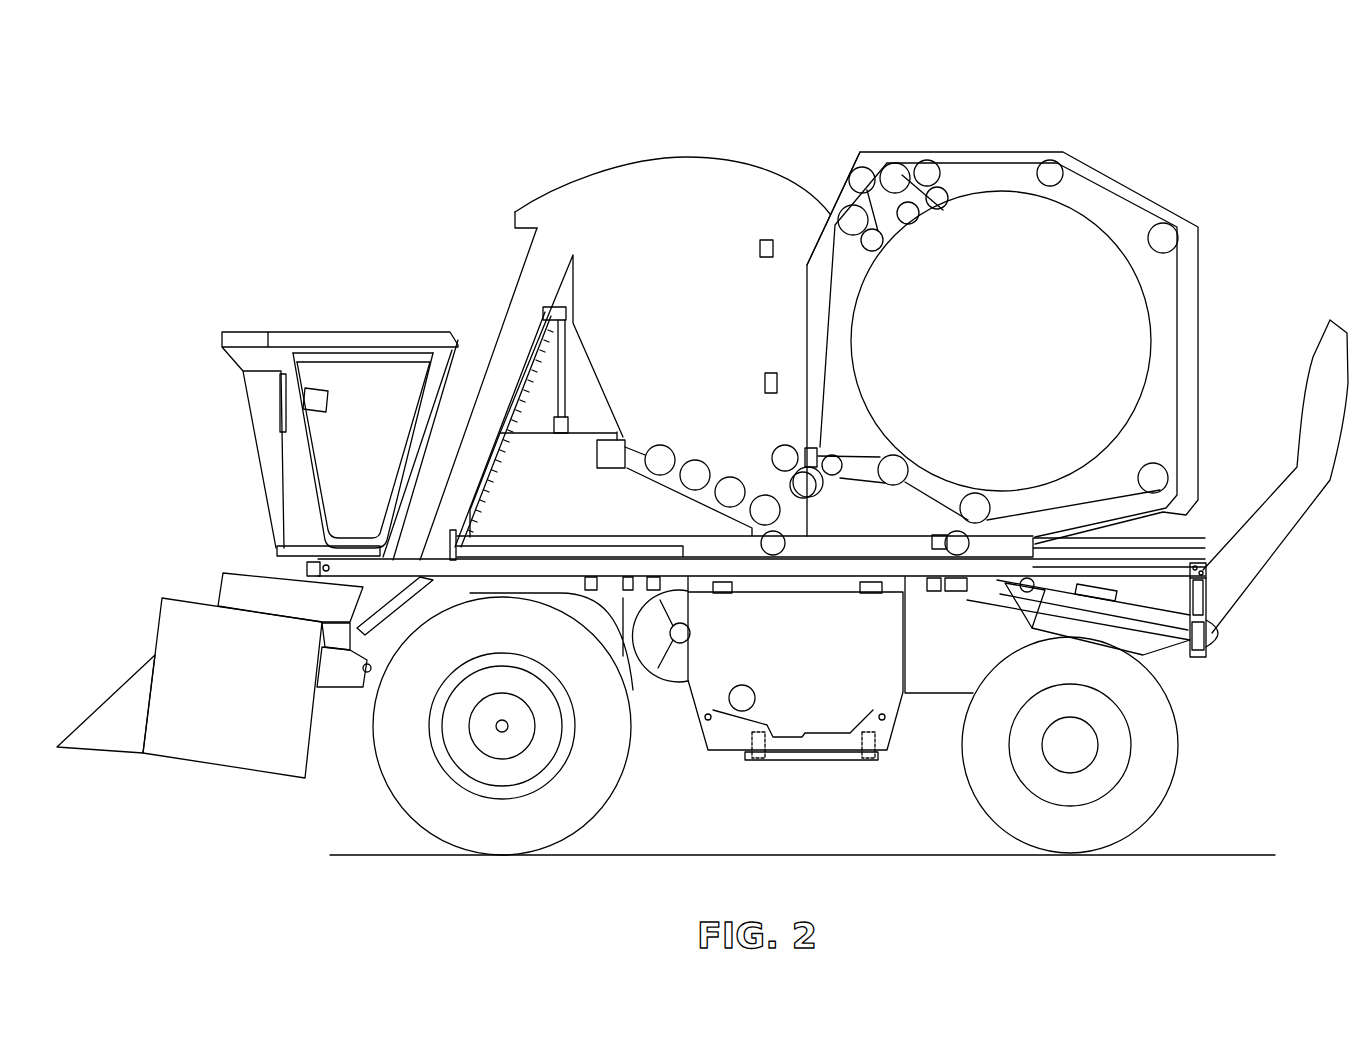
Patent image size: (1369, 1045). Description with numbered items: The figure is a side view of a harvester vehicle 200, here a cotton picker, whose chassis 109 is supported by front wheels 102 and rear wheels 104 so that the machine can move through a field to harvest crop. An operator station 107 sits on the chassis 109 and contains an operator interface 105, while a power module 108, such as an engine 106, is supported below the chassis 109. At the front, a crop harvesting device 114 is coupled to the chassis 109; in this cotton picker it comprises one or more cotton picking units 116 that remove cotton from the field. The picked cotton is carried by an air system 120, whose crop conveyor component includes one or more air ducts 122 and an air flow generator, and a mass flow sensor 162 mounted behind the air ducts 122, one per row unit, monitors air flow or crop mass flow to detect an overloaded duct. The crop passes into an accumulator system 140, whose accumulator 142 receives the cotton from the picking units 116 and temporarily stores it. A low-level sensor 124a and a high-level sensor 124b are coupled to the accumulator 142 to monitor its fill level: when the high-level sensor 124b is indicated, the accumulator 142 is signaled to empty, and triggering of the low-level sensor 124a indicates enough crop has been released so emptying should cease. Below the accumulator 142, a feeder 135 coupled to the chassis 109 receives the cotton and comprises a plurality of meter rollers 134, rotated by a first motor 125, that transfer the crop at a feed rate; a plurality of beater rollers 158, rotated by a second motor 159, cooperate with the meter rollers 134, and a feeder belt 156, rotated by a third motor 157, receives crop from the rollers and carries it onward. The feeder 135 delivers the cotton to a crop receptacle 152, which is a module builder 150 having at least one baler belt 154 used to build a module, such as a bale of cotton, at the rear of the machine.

The harvester vehicle 200 is at (386, 246).
The operator station 107 is at (264, 331).
The operator interface 105 is at (329, 399).
The air system 120 is at (471, 318).
The air duct 122 is at (500, 402).
The mass flow sensor 162 is at (574, 306).
The accumulator system 140 is at (644, 122).
The accumulator 142 is at (679, 250).
The low-level sensor 124a is at (768, 373).
The high-level sensor 124b is at (765, 240).
The meter rollers 134 is at (758, 450).
The crop receptacle 152 is at (946, 95).
The module builder 150 is at (1060, 118).
The baler belt 154 is at (1087, 218).
The second motor 159 is at (832, 445).
The first motor 125 is at (580, 472).
The third motor 157 is at (924, 523).
The feeder 135 is at (645, 506).
The beater rollers 158 is at (790, 497).
The feeder belt 156 is at (809, 508).
The chassis 109 is at (1180, 557).
The crop harvesting device 114 is at (111, 640).
The cotton picking unit 116 is at (197, 745).
The front wheels 102 is at (398, 785).
The rear wheels 104 is at (1160, 774).
The engine 106 is at (797, 697).
The power module 108 is at (844, 797).